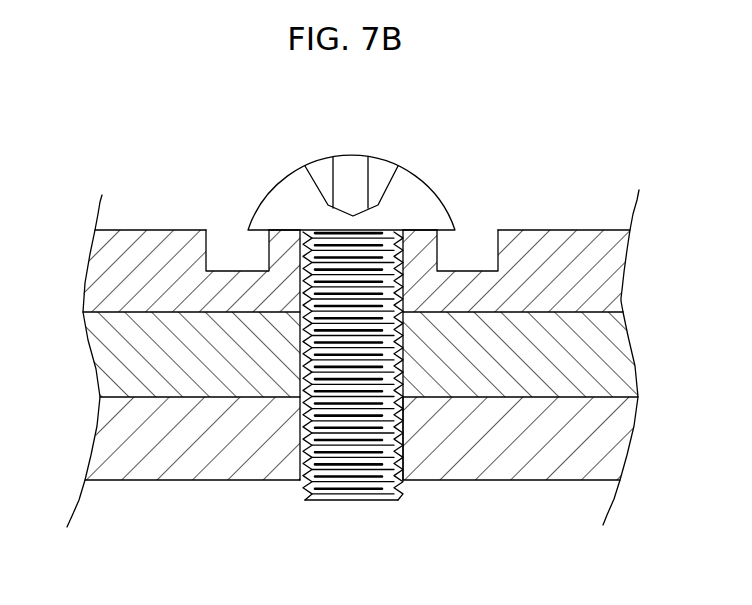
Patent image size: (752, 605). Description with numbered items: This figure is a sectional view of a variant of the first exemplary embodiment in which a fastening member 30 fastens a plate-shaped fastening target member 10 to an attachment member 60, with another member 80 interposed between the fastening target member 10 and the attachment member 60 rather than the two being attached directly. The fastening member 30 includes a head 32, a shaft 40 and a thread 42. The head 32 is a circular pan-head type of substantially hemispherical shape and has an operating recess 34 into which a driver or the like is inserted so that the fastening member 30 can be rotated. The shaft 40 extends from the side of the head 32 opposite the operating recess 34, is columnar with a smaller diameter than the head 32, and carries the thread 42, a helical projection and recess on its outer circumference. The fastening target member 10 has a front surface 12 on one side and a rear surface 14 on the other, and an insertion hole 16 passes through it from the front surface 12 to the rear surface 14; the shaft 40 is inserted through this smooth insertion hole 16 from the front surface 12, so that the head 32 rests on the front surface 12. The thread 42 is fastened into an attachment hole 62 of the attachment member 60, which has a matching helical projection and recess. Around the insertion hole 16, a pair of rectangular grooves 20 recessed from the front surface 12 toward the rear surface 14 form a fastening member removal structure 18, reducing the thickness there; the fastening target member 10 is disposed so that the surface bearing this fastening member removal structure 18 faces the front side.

The fastening target member 10 is at (572, 221).
The front surface 12 is at (131, 231).
The rear surface 14 is at (100, 408).
The insertion hole 16 is at (405, 223).
The fastening member removal structure 18 is at (229, 212).
The grooves 20 is at (221, 230).
The fastening member 30 is at (375, 343).
The head 32 is at (413, 170).
The operating recess 34 is at (323, 165).
The shaft 40 is at (335, 501).
The thread 42 is at (303, 490).
The attachment member 60 is at (197, 489).
The attachment hole 62 is at (412, 394).
The another member 80 is at (588, 350).